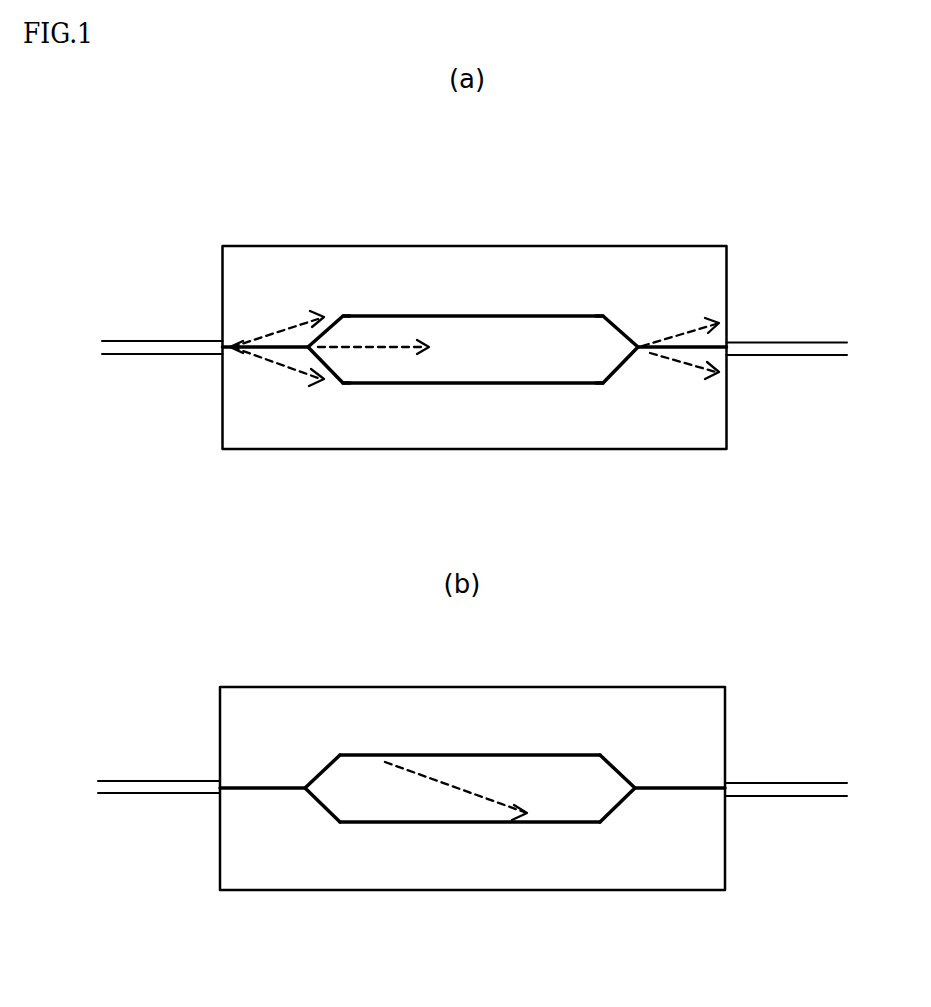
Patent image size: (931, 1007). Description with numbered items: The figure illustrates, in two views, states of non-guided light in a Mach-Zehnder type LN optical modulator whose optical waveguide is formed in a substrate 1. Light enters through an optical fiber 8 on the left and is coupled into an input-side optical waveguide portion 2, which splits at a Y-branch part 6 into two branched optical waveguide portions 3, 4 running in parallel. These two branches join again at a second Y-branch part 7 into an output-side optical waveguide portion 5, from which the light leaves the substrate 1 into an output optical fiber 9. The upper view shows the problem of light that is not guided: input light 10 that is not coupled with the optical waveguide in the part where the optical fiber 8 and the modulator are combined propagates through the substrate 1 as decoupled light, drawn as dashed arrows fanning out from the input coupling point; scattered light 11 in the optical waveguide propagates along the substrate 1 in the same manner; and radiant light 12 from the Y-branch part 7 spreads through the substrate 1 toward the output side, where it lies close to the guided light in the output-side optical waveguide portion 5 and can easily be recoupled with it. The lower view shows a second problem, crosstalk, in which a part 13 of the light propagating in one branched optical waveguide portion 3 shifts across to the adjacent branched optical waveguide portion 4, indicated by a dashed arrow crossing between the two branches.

The substrate 1 is at (585, 263).
The input-side optical waveguide portion 2 is at (272, 350).
The branched optical waveguide portion 3 is at (465, 315).
The branched optical waveguide portion 4 is at (470, 385).
The output-side optical waveguide portion 5 is at (715, 347).
The Y-branch part 6 is at (308, 347).
The Y-branch part 7 is at (640, 350).
The input optical fiber 8 is at (155, 353).
The output optical fiber 9 is at (788, 353).
The input light 10 is at (260, 336).
The scattered light 11 is at (369, 350).
The radiant light 12 is at (690, 367).
The part of propagating light 13 is at (446, 783).